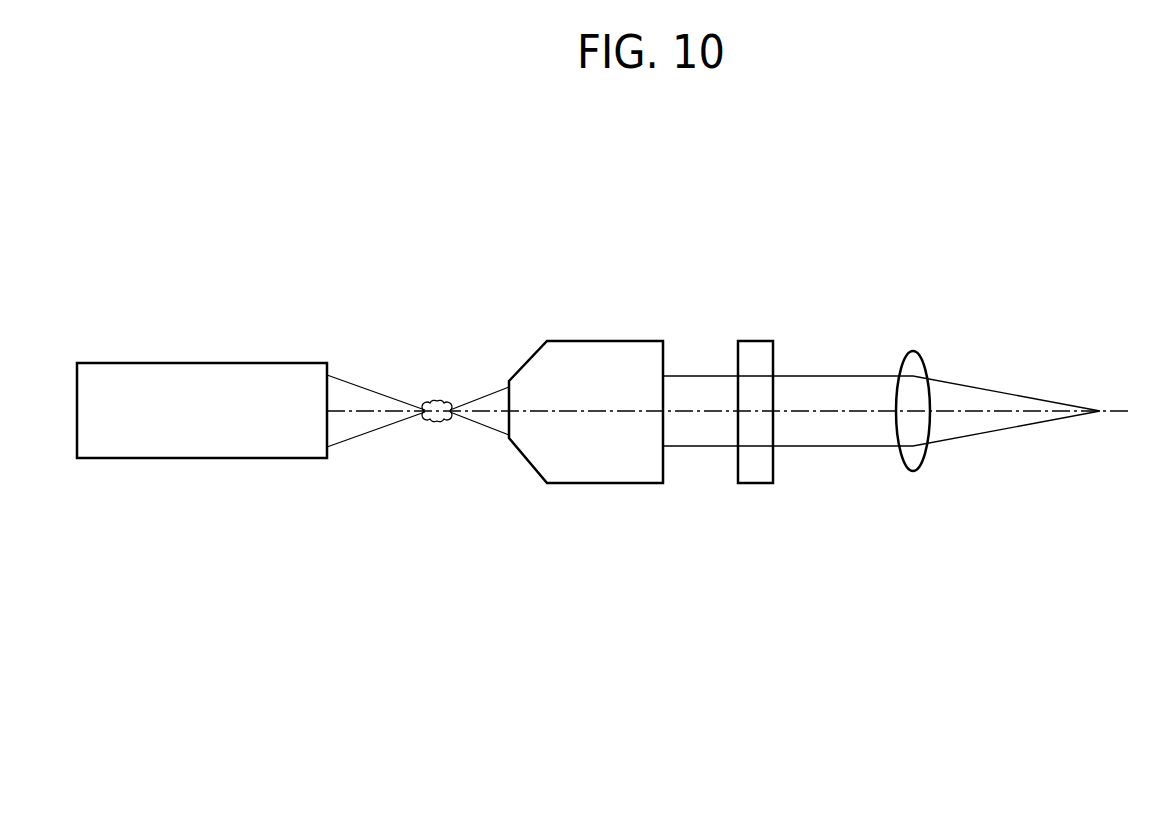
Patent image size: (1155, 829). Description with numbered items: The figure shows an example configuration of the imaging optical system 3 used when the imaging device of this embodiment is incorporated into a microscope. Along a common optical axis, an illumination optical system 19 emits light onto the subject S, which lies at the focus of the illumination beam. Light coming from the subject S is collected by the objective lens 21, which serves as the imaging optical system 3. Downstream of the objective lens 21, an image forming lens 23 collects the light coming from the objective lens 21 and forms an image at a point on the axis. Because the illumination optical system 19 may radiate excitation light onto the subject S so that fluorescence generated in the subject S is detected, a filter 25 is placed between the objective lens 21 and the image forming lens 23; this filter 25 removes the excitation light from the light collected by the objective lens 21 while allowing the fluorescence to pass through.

The imaging optical system 3 is at (411, 235).
The illumination optical system 19 is at (207, 458).
The subject S is at (437, 423).
The objective lens 21 is at (591, 483).
The filter 25 is at (751, 483).
The image forming lens 23 is at (916, 470).